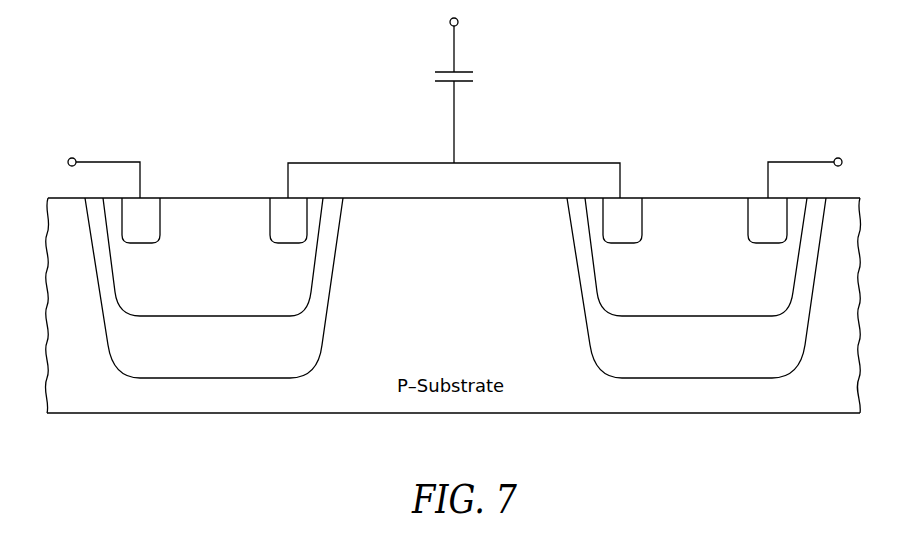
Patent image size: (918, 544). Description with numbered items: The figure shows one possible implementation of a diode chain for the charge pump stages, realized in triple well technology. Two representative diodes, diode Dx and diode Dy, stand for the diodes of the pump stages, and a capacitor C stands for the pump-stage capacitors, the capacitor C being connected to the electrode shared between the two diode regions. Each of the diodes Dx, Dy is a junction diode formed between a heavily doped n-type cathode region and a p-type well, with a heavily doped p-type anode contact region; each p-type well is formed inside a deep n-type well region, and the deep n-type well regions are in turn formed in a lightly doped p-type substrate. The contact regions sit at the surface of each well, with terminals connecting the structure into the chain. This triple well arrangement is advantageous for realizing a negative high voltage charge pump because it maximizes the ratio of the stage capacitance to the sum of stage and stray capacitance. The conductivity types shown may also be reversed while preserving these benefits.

The diode Dx is at (233, 172).
The diode Dy is at (677, 172).
The capacitor C is at (465, 90).